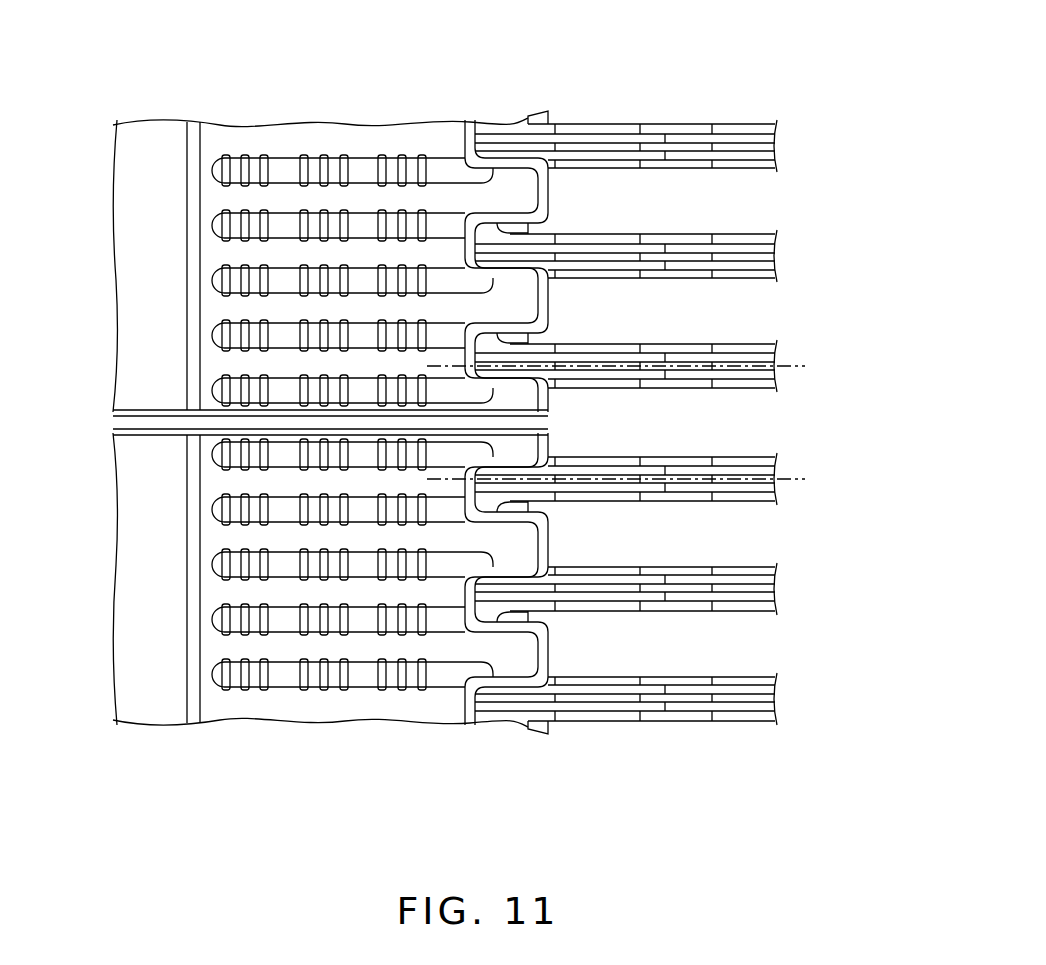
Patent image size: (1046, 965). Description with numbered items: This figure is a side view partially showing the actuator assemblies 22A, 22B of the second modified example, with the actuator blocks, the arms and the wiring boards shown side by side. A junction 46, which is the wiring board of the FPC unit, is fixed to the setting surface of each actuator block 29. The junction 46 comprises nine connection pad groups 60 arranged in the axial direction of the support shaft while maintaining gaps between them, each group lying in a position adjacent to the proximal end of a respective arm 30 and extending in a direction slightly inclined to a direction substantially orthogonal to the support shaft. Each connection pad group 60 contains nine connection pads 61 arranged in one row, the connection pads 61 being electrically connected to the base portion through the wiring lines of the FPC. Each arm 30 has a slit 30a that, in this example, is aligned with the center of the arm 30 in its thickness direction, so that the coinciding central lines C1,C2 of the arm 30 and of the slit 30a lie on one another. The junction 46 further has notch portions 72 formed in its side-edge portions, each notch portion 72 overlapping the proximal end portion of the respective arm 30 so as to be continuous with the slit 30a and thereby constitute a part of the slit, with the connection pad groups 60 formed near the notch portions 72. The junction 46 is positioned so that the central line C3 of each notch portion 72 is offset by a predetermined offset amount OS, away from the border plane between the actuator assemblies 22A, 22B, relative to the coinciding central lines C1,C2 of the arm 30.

The actuator assembly 22A is at (536, 93).
The actuator assembly 22B is at (537, 755).
The actuator block 29 is at (153, 143).
The arm 30 is at (724, 126).
The slit 30a is at (690, 146).
The junction 46 is at (213, 138).
The connection pad group 60 is at (196, 170).
The connection pad 61 is at (264, 155).
The notch portion 72 is at (478, 138).
The offset amount OS is at (615, 527).
The central line C3 is at (658, 353).
The central lines C1,C2 is at (790, 366).